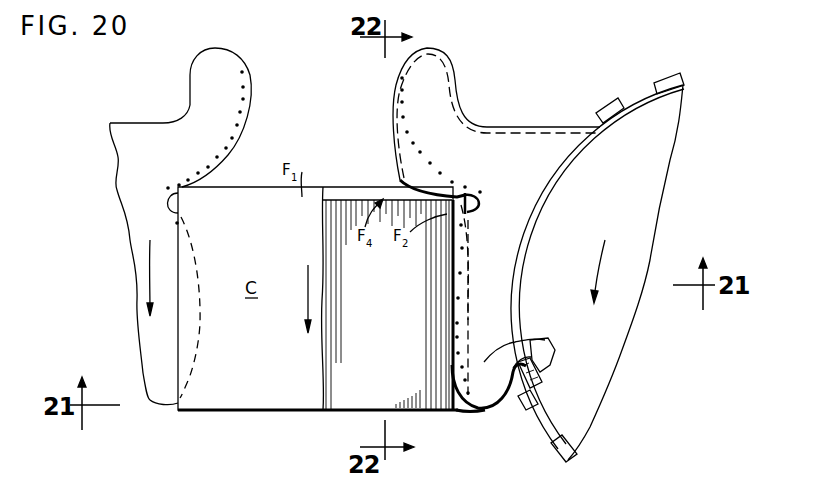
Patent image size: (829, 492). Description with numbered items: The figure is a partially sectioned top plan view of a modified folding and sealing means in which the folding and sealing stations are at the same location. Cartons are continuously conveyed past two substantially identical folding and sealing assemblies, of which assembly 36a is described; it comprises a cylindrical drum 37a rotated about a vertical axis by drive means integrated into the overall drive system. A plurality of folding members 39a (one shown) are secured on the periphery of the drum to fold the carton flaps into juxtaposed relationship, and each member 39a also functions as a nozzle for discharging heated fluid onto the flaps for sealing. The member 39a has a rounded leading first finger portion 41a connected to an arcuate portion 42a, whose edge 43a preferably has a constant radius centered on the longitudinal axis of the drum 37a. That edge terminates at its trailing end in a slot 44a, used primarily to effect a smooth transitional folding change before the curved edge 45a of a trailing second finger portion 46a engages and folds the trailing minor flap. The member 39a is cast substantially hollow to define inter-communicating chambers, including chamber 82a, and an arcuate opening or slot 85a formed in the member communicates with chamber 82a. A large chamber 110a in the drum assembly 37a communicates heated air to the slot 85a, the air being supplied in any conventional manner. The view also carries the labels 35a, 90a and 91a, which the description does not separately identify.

The first side panel 35a is at (114, 116).
The folding and sealing assembly 36a is at (728, 115).
The cylindrical drum 37a is at (662, 160).
The folding member 39a is at (177, 164).
The rounded leading first finger portion 41a is at (484, 409).
The arcuate portion 42a is at (468, 304).
The edge 43a is at (447, 273).
The slot 44a is at (476, 212).
The curved edge 45a is at (402, 141).
The trailing second finger portion 46a is at (437, 50).
The chamber 82a is at (487, 360).
The arcuate opening or slot 85a is at (545, 353).
The U-shaped flange 90a is at (456, 374).
The stitching 91a is at (398, 102).
The large chamber 110a is at (543, 379).